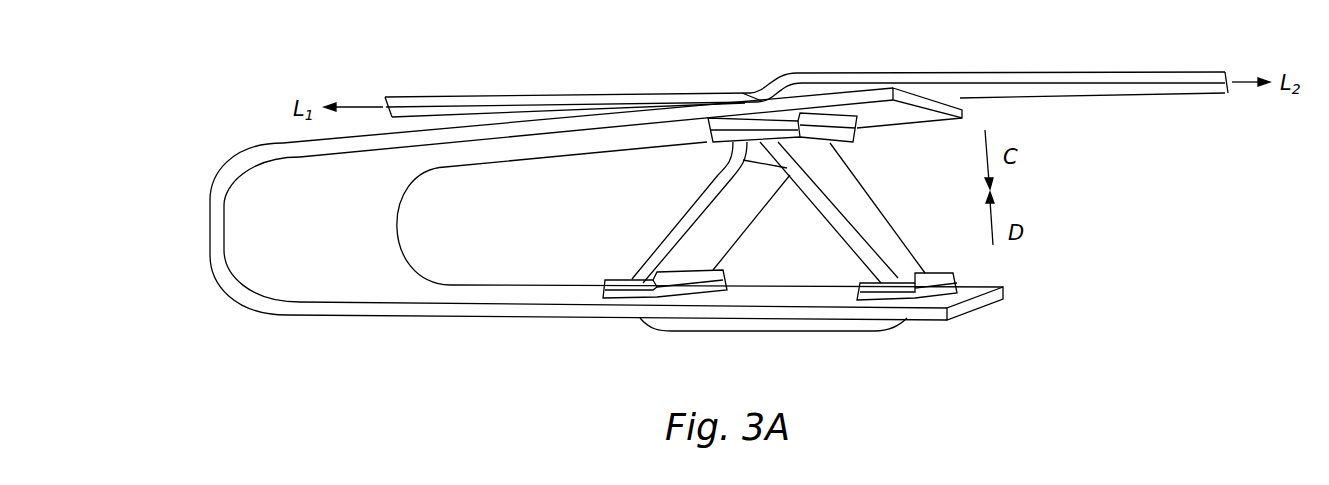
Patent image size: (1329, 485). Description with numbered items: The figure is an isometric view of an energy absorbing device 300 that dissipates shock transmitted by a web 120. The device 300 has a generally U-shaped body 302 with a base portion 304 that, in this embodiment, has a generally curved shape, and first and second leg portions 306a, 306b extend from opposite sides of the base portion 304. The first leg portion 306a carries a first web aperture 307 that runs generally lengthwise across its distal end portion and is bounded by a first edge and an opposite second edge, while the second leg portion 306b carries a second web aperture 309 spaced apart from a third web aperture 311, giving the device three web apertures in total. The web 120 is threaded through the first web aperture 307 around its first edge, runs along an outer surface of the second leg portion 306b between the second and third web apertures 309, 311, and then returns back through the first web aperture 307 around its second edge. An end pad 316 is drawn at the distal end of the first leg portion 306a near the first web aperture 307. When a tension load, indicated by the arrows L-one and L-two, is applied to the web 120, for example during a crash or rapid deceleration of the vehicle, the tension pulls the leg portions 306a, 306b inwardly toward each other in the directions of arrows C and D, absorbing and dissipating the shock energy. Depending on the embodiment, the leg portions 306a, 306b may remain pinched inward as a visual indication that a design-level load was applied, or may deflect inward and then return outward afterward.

The energy absorbing device 300 is at (243, 172).
The U-shaped body 302 is at (216, 205).
The base portion 304 is at (220, 256).
The first leg portion 306a is at (432, 137).
The second leg portion 306b is at (445, 317).
The first web aperture 307 is at (751, 100).
The second web aperture 309 is at (633, 318).
The third web aperture 311 is at (907, 318).
The end pad 316 is at (884, 94).
The web 120 is at (1030, 73).